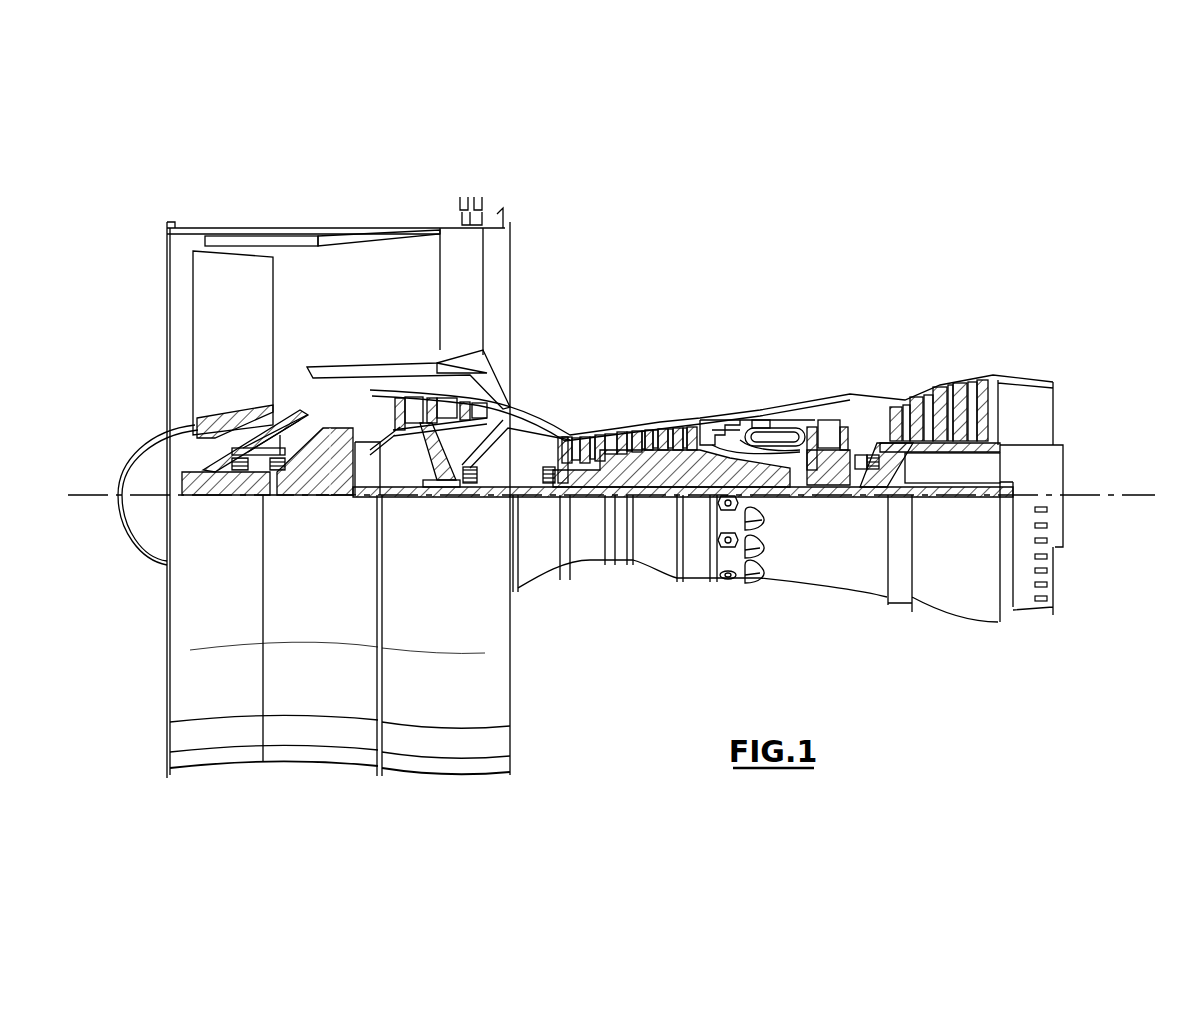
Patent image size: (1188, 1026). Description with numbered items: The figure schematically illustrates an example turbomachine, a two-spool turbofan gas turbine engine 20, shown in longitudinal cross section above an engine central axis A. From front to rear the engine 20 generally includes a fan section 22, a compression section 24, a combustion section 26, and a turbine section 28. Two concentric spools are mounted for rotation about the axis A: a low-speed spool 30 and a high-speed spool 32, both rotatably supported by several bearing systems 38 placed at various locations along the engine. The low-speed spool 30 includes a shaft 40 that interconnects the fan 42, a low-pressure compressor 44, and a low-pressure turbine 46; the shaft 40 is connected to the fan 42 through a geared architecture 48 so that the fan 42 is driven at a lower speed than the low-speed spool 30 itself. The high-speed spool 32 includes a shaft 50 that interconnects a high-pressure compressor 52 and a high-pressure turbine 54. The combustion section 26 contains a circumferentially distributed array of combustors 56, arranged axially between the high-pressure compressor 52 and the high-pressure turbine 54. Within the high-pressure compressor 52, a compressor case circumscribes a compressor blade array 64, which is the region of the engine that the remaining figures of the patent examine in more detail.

The gas turbine engine 20 is at (775, 272).
The fan section 22 is at (270, 220).
The compression section 24 is at (558, 408).
The combustion section 26 is at (766, 392).
The turbine section 28 is at (900, 350).
The low-speed spool 30 is at (650, 497).
The high-speed spool 32 is at (700, 427).
The bearing systems 38 is at (280, 478).
The shaft 40 is at (530, 497).
The fan 42 is at (220, 347).
The low-pressure compressor 44 is at (526, 440).
The low-pressure turbine 46 is at (938, 382).
The geared architecture 48 is at (344, 480).
The shaft 50 is at (773, 483).
The high-pressure compressor 52 is at (632, 440).
The high-pressure turbine 54 is at (827, 423).
The combustors 56 is at (767, 440).
The compressor blade array 64 is at (655, 445).
The engine central axis A is at (1132, 495).